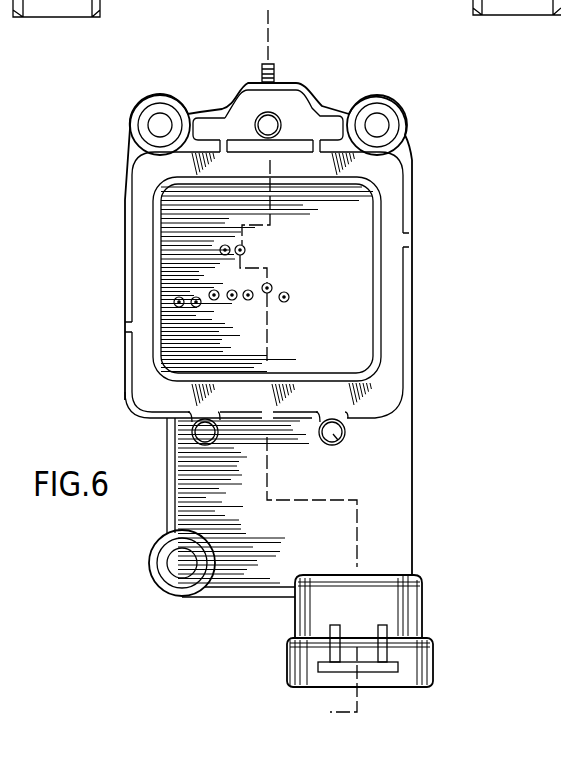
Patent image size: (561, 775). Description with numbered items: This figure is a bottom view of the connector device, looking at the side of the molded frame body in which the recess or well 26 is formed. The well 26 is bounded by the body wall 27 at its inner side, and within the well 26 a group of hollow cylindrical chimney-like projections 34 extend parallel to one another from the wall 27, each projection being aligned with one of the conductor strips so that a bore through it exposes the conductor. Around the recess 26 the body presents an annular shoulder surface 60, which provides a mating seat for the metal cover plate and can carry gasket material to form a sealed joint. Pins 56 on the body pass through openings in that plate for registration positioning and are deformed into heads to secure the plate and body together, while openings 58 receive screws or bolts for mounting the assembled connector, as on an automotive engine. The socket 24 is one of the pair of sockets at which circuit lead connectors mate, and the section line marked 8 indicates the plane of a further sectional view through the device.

The section line 8- 8 is at (258, 10).
The socket 24 is at (102, 0).
The recess or well 26 is at (346, 283).
The body wall 27 is at (362, 325).
The hollow cylindrical chimney-like projections 34 is at (177, 297).
The pins 56 is at (277, 123).
The openings 58 is at (140, 118).
The annular shoulder surface 60 is at (138, 215).